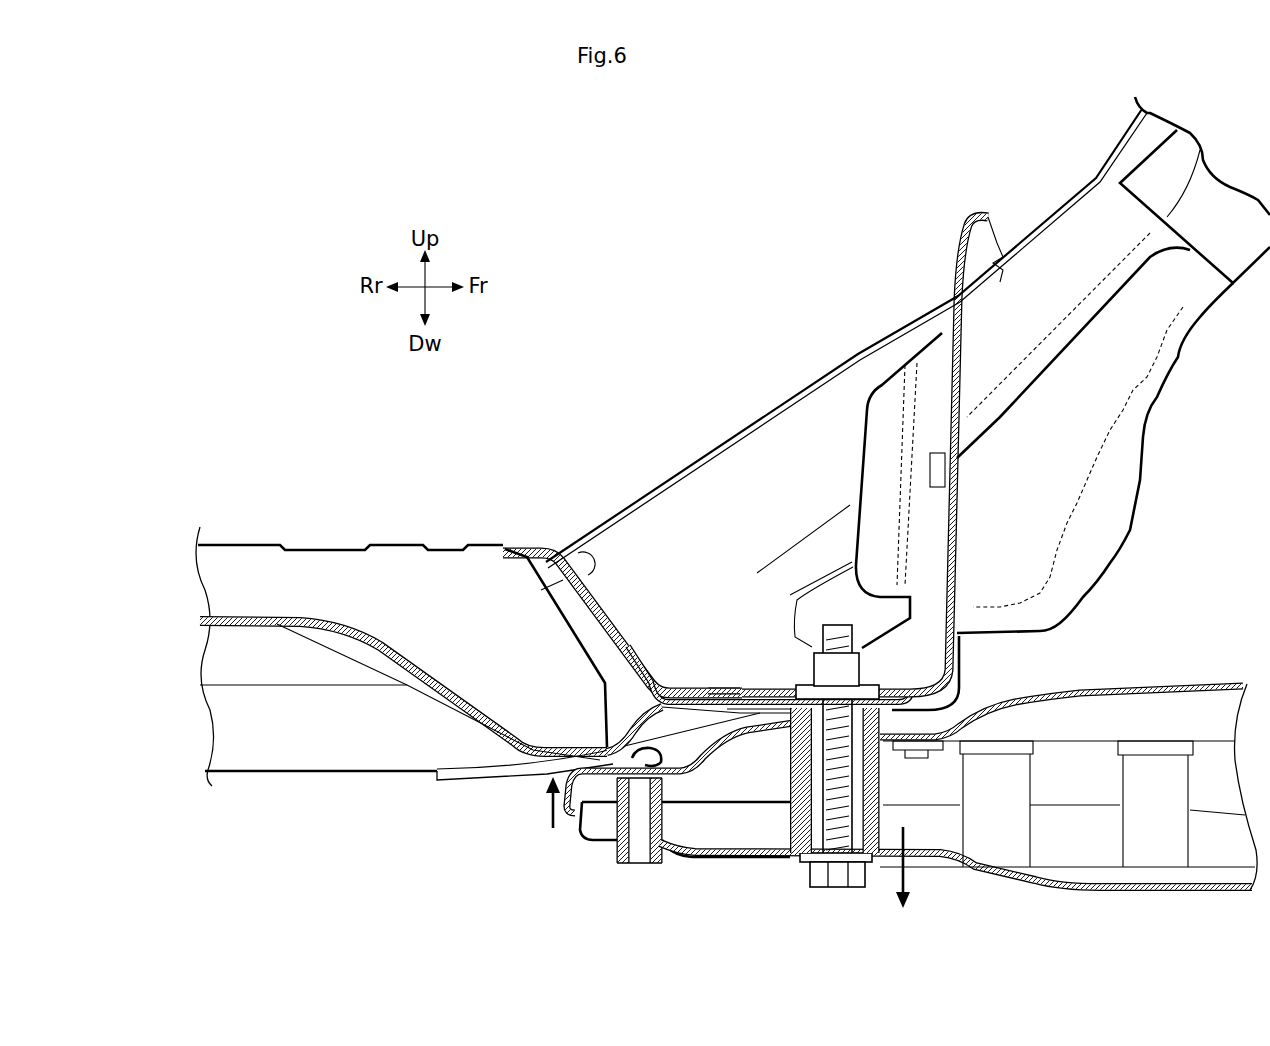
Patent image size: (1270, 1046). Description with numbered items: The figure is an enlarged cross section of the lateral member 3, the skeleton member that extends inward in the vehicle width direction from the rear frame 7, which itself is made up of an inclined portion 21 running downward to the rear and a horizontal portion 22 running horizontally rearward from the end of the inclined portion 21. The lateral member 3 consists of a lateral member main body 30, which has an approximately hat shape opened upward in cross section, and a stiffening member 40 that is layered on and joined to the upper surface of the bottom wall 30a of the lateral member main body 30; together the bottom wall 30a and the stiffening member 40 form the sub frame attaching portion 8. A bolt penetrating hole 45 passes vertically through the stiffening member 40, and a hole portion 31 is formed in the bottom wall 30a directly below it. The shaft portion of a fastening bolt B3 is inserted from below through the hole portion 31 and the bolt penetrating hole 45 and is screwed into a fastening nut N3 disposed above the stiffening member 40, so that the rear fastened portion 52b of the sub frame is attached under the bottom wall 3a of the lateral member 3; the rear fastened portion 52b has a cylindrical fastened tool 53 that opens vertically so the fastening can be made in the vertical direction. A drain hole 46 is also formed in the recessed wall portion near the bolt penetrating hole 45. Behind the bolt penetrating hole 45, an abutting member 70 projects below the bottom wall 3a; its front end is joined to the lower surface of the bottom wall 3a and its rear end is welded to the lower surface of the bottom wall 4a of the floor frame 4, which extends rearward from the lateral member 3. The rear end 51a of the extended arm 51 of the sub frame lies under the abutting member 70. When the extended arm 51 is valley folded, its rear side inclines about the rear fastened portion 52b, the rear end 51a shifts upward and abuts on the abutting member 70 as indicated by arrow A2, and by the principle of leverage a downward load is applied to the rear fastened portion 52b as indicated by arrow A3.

The lateral member 3 is at (722, 470).
The bottom wall of the lateral member 3a is at (932, 715).
The floor frame 4 is at (335, 556).
The bottom wall of the floor frame 4a is at (362, 641).
The rear frame 7 is at (756, 338).
The sub frame attaching portion 8 is at (618, 635).
The inclined portion 21 is at (1070, 235).
The horizontal portion 22 is at (307, 752).
The lateral member main body 30 is at (588, 550).
The bottom wall of the lateral member main body 30a is at (703, 688).
The hole portion 31 is at (733, 752).
The stiffening member 40 is at (648, 662).
The bolt penetrating hole 45 is at (807, 684).
The drain hole 46 is at (758, 716).
The extended arm 51 is at (1141, 682).
The rear end of the extended arm 51a is at (580, 845).
The rear fastened portion 52b is at (790, 885).
The cylindrical fastened tool 53 is at (793, 835).
The abutting member 70 is at (600, 727).
The fastening nut N3 is at (810, 653).
The fastening bolt B3 is at (838, 880).
The arrow A2 is at (553, 814).
The arrow A3 is at (904, 882).